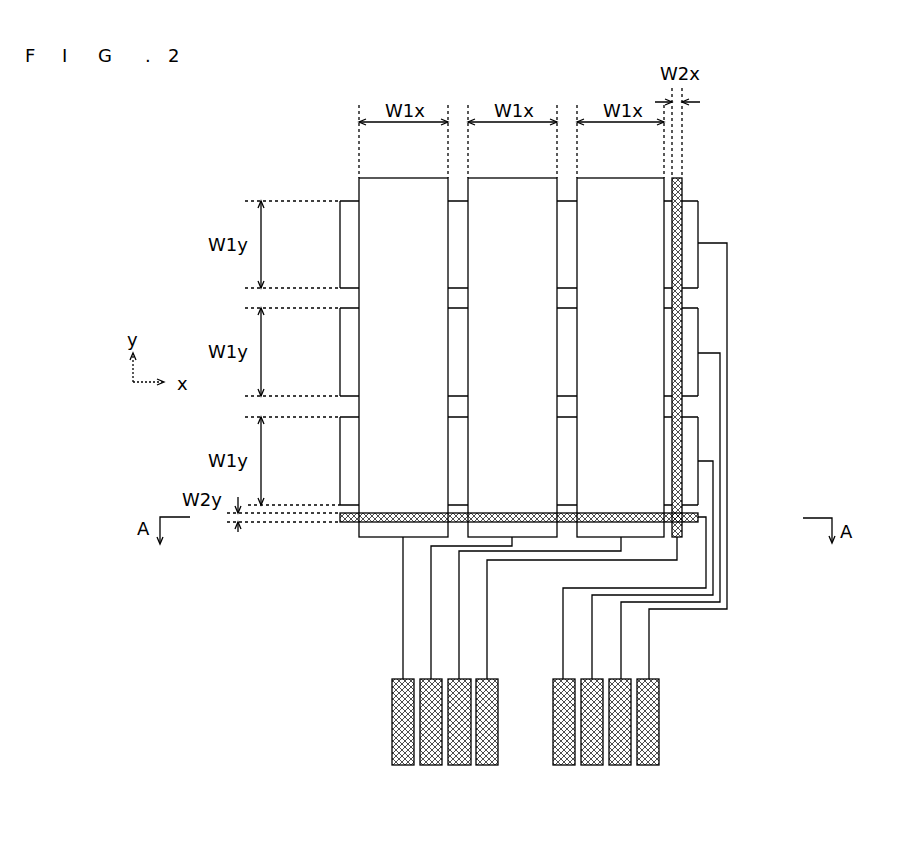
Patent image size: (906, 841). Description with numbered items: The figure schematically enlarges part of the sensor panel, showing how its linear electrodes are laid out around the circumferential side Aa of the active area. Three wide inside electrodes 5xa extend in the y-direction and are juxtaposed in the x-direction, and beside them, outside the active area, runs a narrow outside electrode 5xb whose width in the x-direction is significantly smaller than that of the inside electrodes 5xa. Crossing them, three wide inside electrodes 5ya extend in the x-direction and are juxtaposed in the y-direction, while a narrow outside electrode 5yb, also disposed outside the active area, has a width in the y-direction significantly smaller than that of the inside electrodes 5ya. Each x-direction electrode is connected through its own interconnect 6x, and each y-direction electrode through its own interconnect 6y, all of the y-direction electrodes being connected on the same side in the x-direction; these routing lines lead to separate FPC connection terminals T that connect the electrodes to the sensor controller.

The inside electrodes 5xa is at (405, 185).
The outside electrode 5xb is at (677, 182).
The inside electrodes 5ya is at (346, 246).
The outside electrode 5yb is at (340, 522).
The interconnects 6x is at (403, 567).
The interconnects 6y is at (727, 468).
The FPC connection terminals T is at (667, 718).
The circumferential side of the active area Aa is at (700, 209).